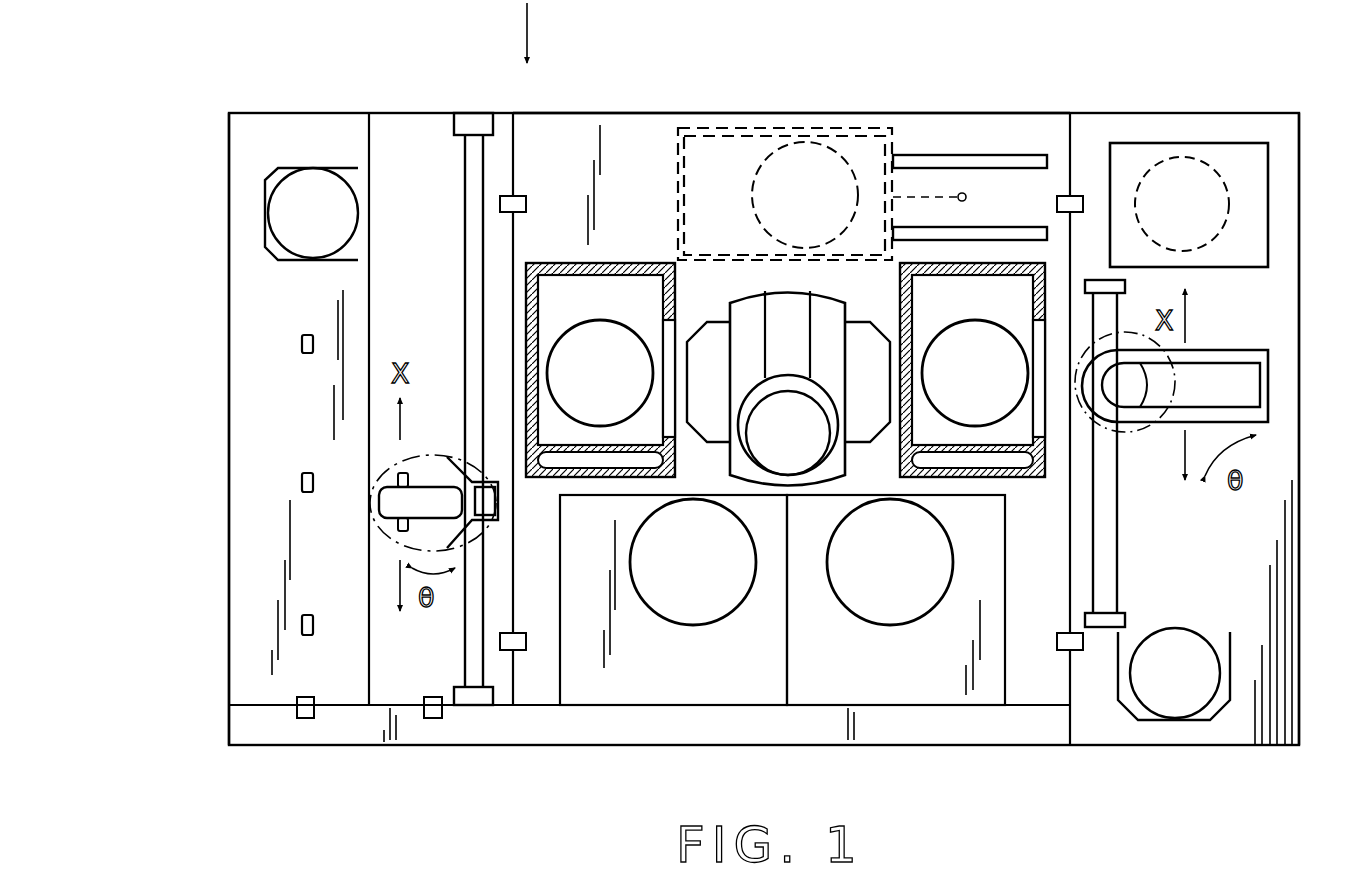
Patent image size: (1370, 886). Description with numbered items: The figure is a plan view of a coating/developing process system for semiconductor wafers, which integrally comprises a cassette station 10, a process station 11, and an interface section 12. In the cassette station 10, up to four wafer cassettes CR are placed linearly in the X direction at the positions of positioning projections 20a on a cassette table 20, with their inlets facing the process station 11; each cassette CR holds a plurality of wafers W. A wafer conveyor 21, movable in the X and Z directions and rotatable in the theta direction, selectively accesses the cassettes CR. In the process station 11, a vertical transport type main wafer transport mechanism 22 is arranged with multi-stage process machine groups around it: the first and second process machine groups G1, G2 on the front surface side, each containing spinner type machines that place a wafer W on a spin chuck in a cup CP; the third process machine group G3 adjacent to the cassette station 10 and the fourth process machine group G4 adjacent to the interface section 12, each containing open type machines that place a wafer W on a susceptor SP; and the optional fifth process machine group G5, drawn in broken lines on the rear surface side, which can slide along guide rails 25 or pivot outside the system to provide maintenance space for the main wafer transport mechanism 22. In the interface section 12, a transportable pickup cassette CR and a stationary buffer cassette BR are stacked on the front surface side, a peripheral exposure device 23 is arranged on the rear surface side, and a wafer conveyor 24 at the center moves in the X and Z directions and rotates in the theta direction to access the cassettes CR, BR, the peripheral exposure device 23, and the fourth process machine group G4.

The cassette station 10 is at (425, 108).
The process station 11 is at (656, 110).
The interface section 12 is at (1170, 104).
The cassette table 20 is at (243, 497).
The positioning projections 20a is at (300, 347).
The wafer conveyor 21 is at (383, 507).
The main wafer transport mechanism 22 is at (738, 298).
The peripheral exposure device 23 is at (1235, 150).
The wafer conveyor 24 is at (1250, 382).
The guide rails 25 is at (1027, 227).
The wafer W is at (312, 182).
The wafer cassette CR is at (265, 175).
The buffer cassette BR is at (1225, 707).
The first process machine group G1 is at (605, 705).
The second process machine group G2 is at (889, 705).
The third process machine group G3 is at (627, 263).
The fourth process machine group G4 is at (995, 263).
The fifth process machine group G5 is at (836, 128).
The susceptor SP is at (590, 322).
The cup CP is at (697, 626).